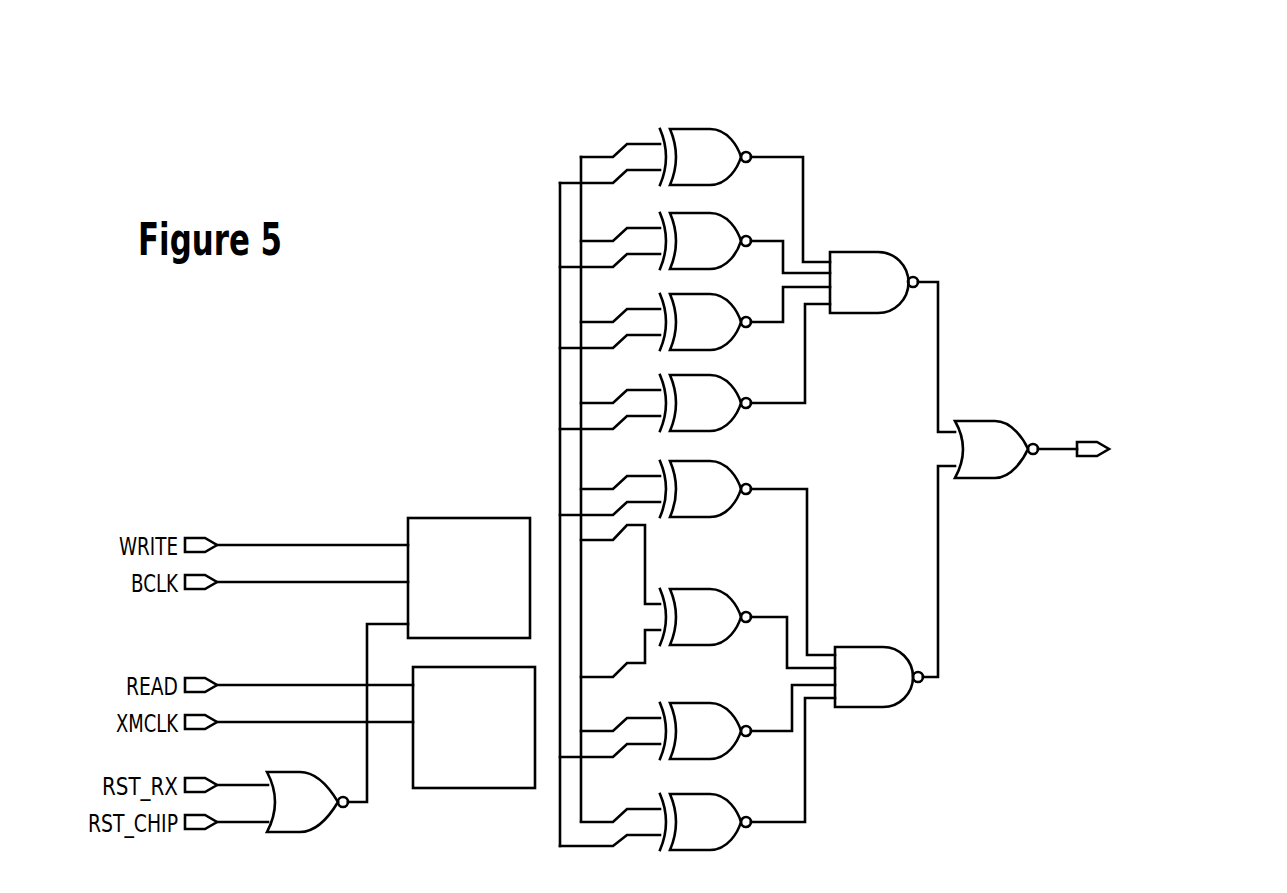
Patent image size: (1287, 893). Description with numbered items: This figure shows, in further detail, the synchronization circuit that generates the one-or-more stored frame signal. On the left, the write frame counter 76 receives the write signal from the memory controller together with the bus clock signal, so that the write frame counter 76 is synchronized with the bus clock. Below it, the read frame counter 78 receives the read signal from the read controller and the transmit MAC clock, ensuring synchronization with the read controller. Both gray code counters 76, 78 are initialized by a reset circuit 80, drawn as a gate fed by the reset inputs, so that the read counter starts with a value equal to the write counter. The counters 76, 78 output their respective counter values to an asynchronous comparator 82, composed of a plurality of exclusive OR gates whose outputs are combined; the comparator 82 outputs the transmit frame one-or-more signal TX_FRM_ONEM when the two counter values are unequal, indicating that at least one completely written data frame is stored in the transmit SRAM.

The write frame counter 76 is at (452, 523).
The read frame counter 78 is at (483, 782).
The reset circuit 80 is at (298, 820).
The asynchronous comparator 82 is at (704, 96).